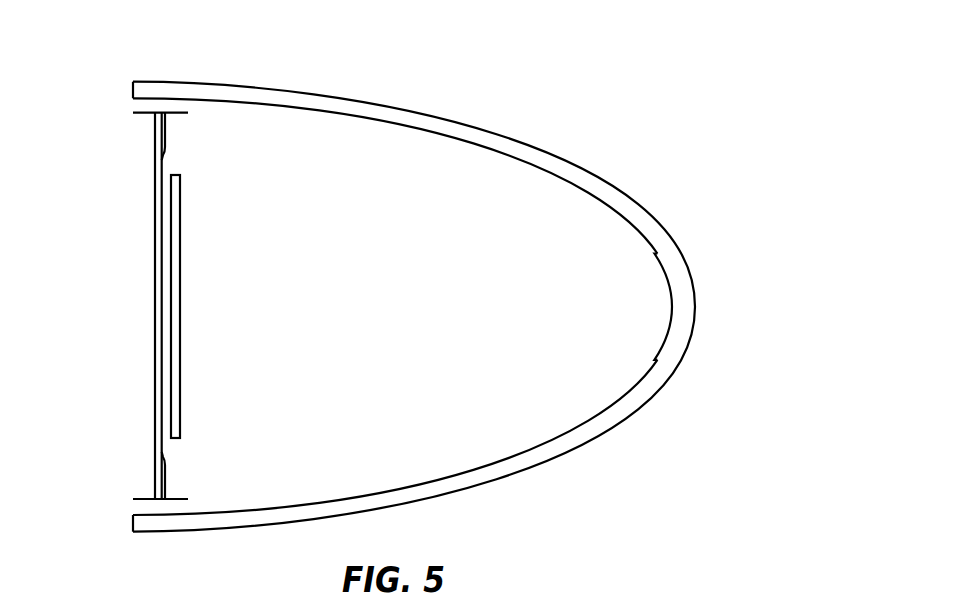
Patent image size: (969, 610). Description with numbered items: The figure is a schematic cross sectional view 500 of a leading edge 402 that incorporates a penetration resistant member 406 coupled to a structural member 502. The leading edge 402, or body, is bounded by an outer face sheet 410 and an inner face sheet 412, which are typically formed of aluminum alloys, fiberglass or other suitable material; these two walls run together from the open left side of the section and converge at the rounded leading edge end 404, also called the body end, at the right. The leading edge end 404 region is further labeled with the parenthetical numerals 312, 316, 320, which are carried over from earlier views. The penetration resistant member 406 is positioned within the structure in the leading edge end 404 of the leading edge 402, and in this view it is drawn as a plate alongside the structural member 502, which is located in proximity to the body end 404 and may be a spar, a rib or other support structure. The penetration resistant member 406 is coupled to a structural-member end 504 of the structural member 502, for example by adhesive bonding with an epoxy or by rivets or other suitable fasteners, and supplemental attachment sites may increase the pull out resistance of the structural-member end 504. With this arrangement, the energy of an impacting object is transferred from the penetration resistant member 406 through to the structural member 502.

The cross sectional view 500 is at (657, 87).
The leading edge 402 is at (504, 276).
The outer face sheet 410 is at (472, 122).
The inner face sheet 412 is at (425, 132).
The leading edge end 404 is at (785, 248).
The tip region 312 is at (764, 293).
The tip region 316 is at (764, 293).
The tip region 320 is at (764, 293).
The structural member 502 is at (155, 306).
The structural-member end 504 is at (166, 159).
The penetration resistant member 406 is at (182, 245).